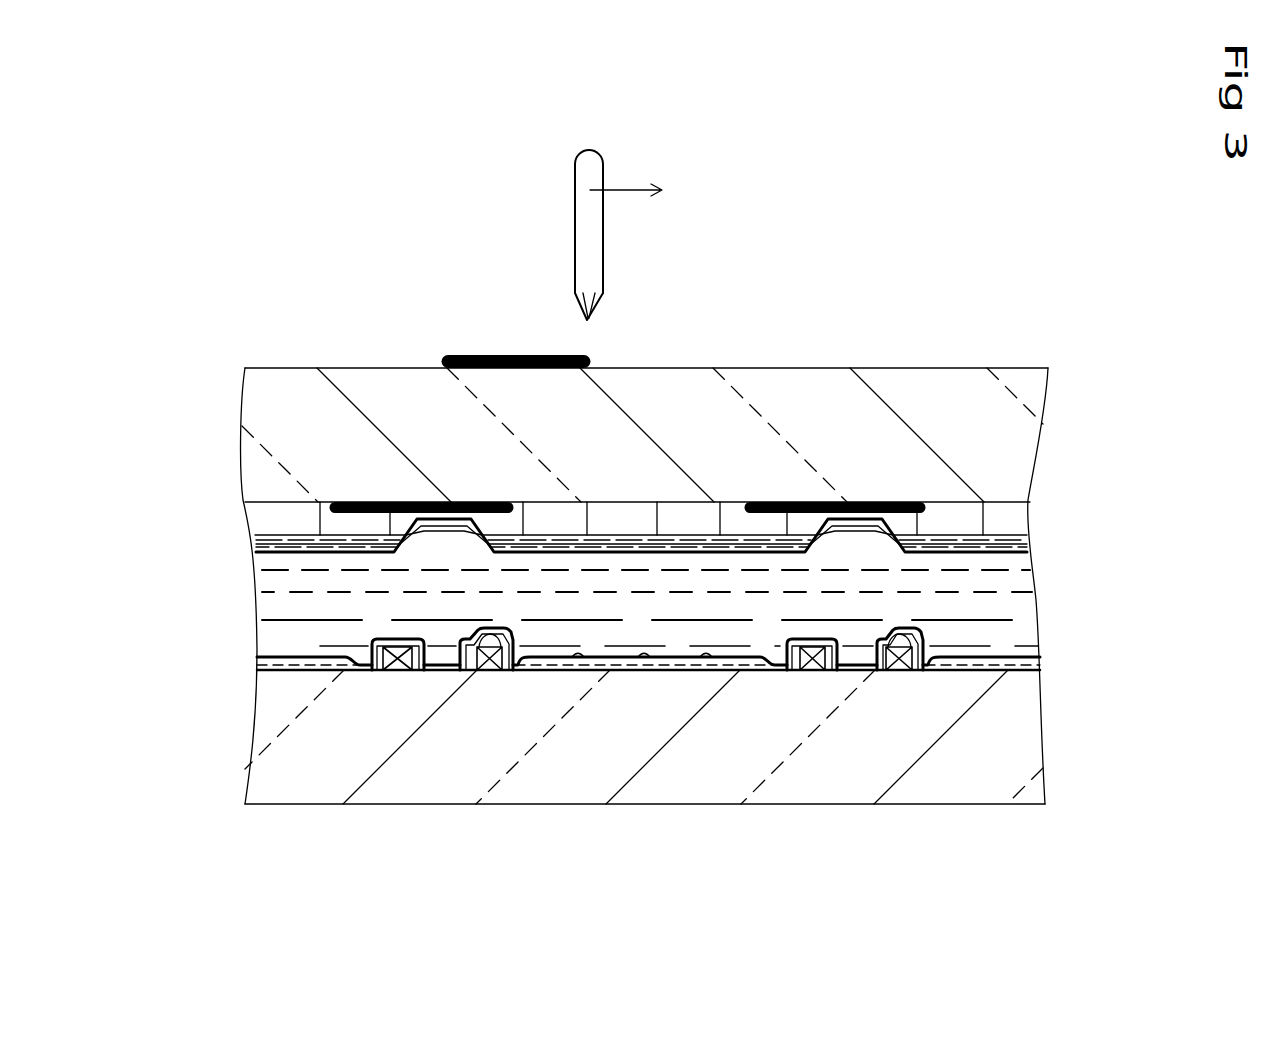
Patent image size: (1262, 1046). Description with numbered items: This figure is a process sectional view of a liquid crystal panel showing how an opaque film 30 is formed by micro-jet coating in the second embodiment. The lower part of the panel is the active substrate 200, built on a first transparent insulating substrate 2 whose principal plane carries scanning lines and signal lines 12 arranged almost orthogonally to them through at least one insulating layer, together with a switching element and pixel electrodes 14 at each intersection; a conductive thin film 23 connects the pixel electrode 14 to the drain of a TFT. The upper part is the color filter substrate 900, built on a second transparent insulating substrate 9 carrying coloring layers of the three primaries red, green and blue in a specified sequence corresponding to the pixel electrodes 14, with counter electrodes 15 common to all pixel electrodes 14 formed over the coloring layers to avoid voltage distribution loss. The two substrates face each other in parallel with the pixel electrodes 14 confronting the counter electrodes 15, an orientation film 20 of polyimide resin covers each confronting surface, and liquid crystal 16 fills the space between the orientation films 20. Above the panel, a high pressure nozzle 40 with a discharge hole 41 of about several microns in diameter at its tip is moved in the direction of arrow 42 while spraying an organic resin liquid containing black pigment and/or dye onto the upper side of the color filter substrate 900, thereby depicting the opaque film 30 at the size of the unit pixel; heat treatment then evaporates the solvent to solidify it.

The first transparent insulating substrate 2 is at (695, 758).
The second transparent insulating substrate 9 is at (858, 420).
The signal lines 12 is at (395, 672).
The pixel electrodes 14 is at (583, 668).
The counter electrodes 15 is at (258, 538).
The liquid crystal 16 is at (307, 622).
The orientation film 20 is at (985, 651).
The conductive thin film 23 is at (478, 672).
The opaque film 30 is at (490, 357).
The high pressure nozzle 40 is at (588, 168).
The discharge hole 41 is at (575, 293).
The arrow 42 is at (650, 190).
The active substrate 200 is at (1060, 710).
The color filter substrate 900 is at (1045, 478).